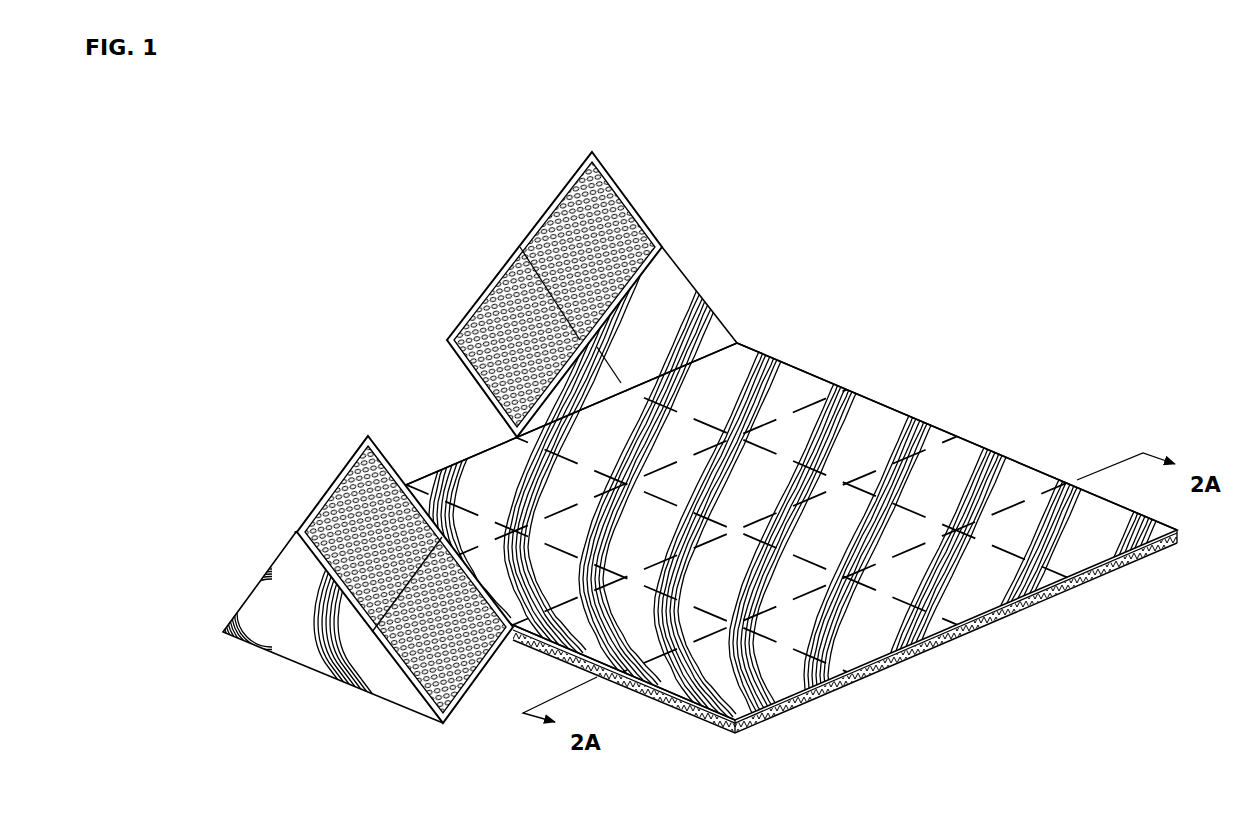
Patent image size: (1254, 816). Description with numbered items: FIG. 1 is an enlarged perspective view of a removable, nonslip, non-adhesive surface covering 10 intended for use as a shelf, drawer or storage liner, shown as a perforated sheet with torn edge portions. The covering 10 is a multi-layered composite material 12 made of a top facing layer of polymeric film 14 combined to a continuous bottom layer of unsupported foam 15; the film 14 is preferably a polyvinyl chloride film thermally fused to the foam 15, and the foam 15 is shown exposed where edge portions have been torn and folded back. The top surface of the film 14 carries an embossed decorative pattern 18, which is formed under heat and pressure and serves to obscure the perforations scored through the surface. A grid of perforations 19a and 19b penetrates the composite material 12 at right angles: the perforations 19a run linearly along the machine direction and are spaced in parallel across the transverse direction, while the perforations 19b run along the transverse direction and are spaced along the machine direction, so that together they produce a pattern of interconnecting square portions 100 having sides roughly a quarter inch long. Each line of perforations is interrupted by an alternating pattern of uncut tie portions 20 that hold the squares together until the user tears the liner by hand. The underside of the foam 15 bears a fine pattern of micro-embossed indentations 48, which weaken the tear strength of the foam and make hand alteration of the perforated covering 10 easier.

The surface covering 10 is at (952, 281).
The multi-layered composite material 12 is at (1196, 528).
The facing layer of polymeric film 14 is at (890, 627).
The unsupported foam 15 is at (628, 188).
The embossed decorative pattern 18 is at (660, 313).
The perforations 19a is at (420, 490).
The perforations 19b is at (945, 427).
The uncut tie portions 20 is at (795, 380).
The micro-embossed indentations 48 is at (555, 192).
The interconnecting square portions 100 is at (747, 588).